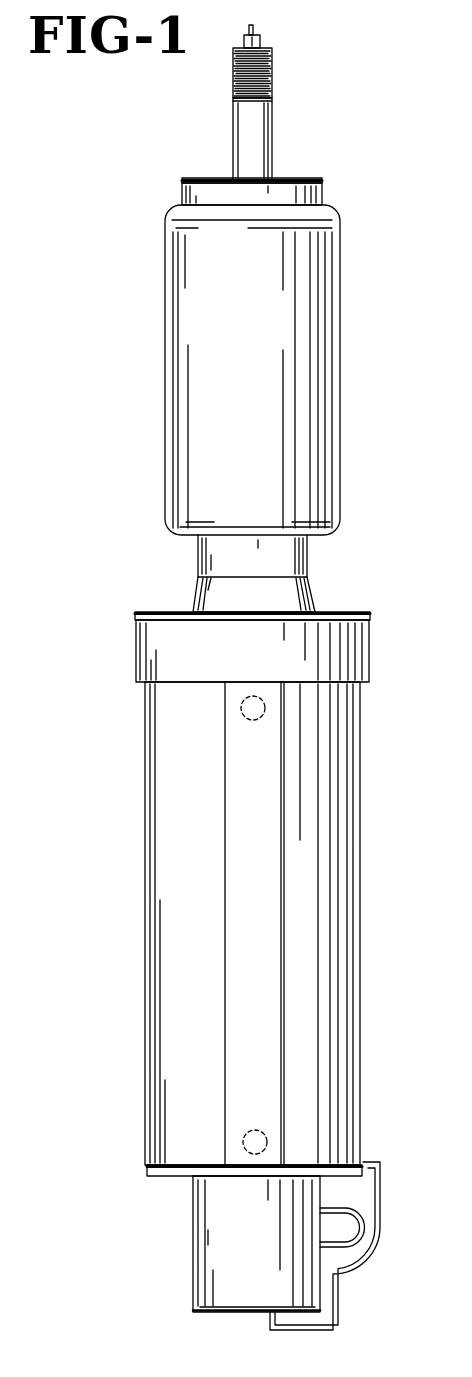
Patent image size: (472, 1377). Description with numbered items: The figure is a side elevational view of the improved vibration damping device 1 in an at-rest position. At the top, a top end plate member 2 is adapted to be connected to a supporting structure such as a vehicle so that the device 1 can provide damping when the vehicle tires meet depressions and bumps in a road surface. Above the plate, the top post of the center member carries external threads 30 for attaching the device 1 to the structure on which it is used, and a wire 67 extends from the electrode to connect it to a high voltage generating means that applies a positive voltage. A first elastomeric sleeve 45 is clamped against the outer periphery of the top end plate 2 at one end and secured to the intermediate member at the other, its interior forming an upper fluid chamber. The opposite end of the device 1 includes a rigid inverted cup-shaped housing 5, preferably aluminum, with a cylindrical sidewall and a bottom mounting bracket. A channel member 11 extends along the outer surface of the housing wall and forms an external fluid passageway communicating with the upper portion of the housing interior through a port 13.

The vibration damping device 1 is at (272, 670).
The top end plate member 2 is at (297, 180).
The inverted cup-shaped housing 5 is at (296, 1006).
The channel member 11 is at (260, 980).
The port 13 is at (247, 714).
The external threads 30 is at (272, 65).
The first elastomeric sleeve 45 is at (165, 348).
The wire 67 is at (253, 28).